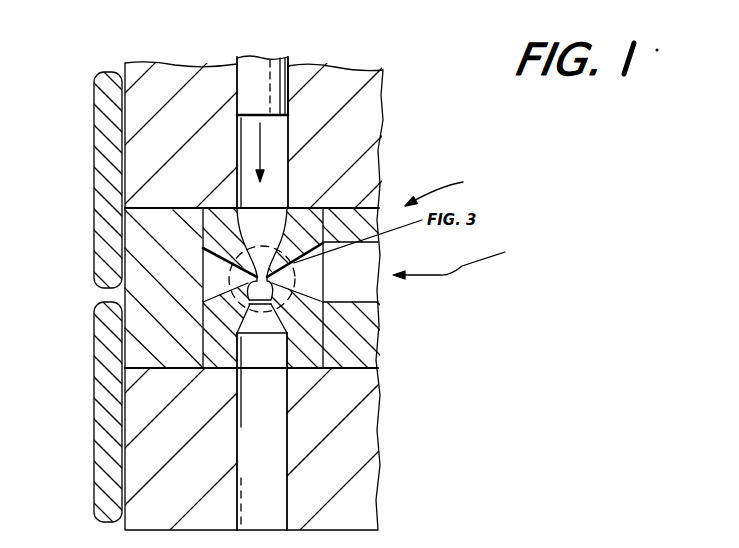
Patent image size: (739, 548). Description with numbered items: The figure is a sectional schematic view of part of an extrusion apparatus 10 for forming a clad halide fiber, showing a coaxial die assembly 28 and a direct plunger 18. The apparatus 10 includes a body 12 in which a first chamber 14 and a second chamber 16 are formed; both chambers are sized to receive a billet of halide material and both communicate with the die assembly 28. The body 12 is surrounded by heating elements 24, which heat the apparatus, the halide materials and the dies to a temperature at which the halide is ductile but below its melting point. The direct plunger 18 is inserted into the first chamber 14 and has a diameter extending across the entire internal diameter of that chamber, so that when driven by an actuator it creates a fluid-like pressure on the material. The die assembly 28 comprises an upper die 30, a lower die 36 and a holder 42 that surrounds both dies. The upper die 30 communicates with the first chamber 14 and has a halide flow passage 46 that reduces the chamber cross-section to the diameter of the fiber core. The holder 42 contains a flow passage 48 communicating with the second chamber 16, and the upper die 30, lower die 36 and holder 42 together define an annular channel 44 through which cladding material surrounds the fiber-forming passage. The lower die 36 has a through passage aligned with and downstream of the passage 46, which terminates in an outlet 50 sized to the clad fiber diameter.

The extrusion apparatus 10 is at (71, 96).
The body 12 is at (360, 125).
The first chamber 14 is at (270, 130).
The second chamber 16 is at (368, 267).
The direct plunger 18 is at (273, 63).
The heating elements 24 is at (100, 232).
The die assembly 28 is at (457, 184).
The upper die 30 is at (352, 213).
The lower die 36 is at (298, 340).
The holder 42 is at (136, 288).
The annular channel 44 is at (208, 258).
The halide flow passage 46 is at (295, 72).
The flow passage 48 is at (468, 259).
The outlet 50 is at (281, 455).